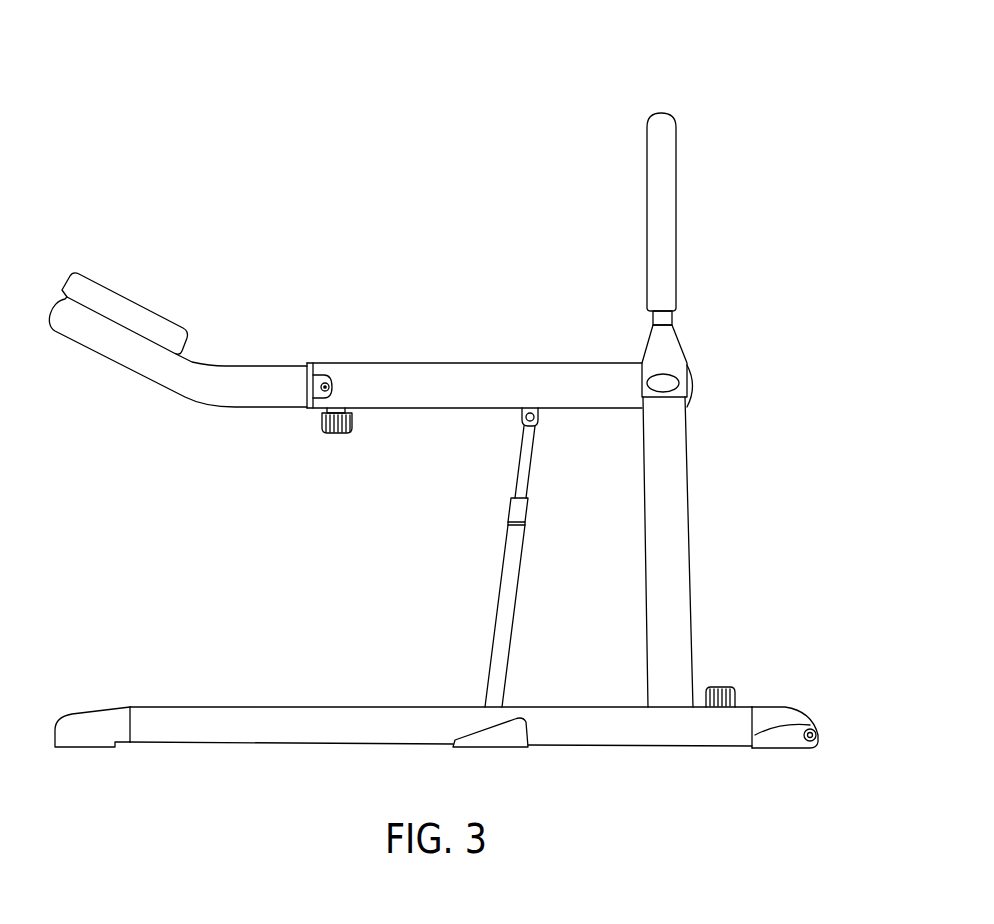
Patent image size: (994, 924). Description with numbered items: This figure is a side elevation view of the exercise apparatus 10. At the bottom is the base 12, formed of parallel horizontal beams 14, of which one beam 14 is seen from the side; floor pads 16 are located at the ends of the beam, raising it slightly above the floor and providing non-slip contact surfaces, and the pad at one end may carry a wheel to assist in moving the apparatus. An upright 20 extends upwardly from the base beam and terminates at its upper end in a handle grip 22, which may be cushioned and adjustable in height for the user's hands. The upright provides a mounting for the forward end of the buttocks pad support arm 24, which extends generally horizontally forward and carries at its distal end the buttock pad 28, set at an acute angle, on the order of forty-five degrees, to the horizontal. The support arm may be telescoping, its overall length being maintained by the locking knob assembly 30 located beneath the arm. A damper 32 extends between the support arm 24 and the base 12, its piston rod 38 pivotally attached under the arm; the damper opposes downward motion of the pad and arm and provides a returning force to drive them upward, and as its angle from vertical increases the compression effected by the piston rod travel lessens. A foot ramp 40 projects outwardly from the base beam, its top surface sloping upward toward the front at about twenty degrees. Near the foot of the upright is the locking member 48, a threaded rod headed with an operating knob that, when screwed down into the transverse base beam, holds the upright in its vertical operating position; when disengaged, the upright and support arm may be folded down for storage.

The exercise apparatus 10 is at (375, 83).
The base 12 is at (172, 685).
The horizontal beam 14 is at (305, 729).
The floor pad 16 is at (88, 736).
The upright 20 is at (678, 497).
The handle grip 22 is at (665, 205).
The buttocks pad support arm 24 is at (445, 372).
The buttock pad 28 is at (120, 312).
The locking knob assembly 30 is at (334, 437).
The damper 32 is at (508, 597).
The piston rod 38 is at (527, 462).
The foot ramp 40 is at (508, 738).
The locking member 48 is at (722, 688).